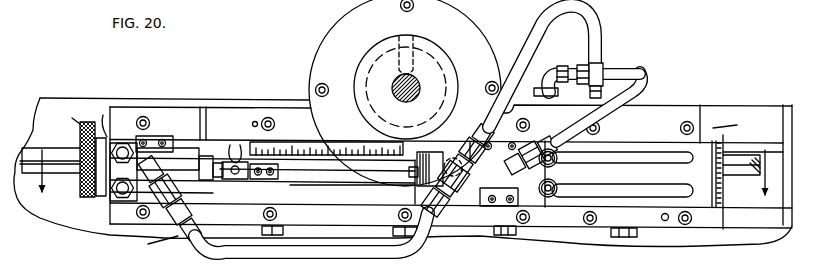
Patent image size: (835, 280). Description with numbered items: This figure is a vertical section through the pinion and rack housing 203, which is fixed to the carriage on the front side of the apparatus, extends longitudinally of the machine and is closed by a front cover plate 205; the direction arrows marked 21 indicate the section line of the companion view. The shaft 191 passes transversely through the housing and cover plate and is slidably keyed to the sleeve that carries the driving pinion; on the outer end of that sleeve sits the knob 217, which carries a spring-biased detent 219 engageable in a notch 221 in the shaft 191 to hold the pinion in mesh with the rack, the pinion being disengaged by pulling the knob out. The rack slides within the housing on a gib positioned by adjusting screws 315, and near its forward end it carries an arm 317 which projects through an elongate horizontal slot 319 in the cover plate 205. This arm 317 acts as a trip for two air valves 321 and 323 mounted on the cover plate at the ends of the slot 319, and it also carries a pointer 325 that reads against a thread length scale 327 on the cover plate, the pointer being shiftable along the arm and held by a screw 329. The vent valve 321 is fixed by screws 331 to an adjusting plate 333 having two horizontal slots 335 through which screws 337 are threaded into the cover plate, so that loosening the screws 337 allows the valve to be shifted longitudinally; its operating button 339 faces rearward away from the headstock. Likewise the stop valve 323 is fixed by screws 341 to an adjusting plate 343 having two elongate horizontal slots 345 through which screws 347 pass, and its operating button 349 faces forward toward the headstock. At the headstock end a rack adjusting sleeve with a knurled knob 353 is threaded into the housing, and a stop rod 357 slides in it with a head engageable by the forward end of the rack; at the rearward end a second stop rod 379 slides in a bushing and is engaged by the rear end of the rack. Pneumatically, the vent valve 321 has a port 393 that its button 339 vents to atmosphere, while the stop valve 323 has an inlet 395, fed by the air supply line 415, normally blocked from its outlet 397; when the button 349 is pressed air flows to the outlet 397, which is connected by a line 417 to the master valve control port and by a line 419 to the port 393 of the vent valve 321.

The direction arrow 21 is at (403, 176).
The shaft 191 is at (393, 86).
The pinion and rack housing 203 is at (286, 102).
The front cover plate 205 is at (425, 118).
The knob 217 is at (369, 58).
The spring-biased detent 219 is at (401, 66).
The notch 221 is at (427, 75).
The adjusting screws 315 is at (612, 237).
The arm 317 is at (249, 179).
The elongate horizontal slot 319 is at (337, 177).
The air valve 321 is at (187, 150).
The air valve (stop valve) 323 is at (484, 185).
The pointer 325 is at (232, 150).
The thread length scale 327 is at (303, 144).
The screw 329 is at (230, 179).
The screws 331 is at (146, 140).
The adjusting plate 333 is at (207, 140).
The horizontal slots 335 is at (133, 145).
The screws 337 is at (98, 204).
The operating button 339 is at (214, 198).
The screws 341 is at (533, 123).
The adjusting plate 343 is at (481, 143).
The elongate horizontal slots 345 is at (651, 191).
The screws 347 is at (556, 166).
The operating button 349 is at (409, 172).
The knurled knob 353 is at (63, 113).
The stop rod 357 is at (50, 148).
The stop rod 379 is at (733, 178).
The valve port 393 is at (170, 198).
The valve inlet 395 is at (517, 183).
The valve outlet 397 is at (446, 164).
The air supply line 415 is at (641, 83).
The line 417 is at (547, 14).
The line 419 is at (322, 258).